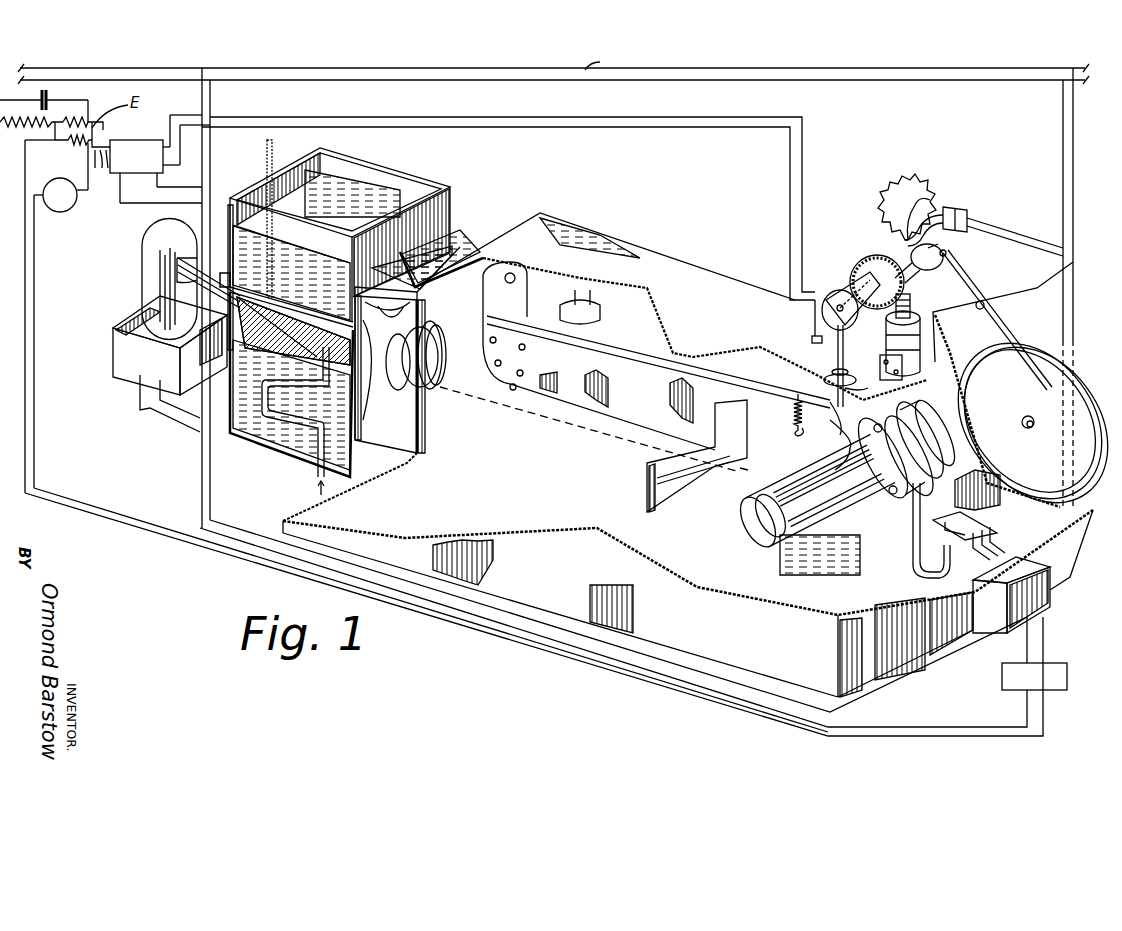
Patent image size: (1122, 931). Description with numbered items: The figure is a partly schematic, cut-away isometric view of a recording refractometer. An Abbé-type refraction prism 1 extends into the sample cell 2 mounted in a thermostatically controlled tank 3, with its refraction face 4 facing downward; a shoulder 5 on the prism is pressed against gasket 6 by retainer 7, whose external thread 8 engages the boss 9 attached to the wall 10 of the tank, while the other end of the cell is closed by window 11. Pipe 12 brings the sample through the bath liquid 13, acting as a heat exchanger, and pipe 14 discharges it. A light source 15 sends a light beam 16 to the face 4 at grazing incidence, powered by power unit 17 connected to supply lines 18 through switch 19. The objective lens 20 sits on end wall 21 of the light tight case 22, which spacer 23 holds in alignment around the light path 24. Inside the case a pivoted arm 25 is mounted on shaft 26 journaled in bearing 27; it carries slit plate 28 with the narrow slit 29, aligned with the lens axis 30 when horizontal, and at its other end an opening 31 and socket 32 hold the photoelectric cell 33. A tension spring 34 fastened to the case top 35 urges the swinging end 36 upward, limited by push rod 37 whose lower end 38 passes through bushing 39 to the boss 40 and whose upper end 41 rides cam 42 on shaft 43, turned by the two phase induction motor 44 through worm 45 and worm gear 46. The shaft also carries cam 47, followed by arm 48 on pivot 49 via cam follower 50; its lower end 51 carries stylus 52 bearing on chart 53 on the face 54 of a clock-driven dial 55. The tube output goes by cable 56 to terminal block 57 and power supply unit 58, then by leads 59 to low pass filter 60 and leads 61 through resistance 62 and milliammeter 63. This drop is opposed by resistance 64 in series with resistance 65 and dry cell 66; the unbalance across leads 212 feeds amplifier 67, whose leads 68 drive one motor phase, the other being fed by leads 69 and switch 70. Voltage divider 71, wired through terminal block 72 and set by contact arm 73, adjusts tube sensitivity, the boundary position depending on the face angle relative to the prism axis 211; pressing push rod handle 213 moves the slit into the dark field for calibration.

The refraction prism 1 is at (293, 312).
The sample vessel or cell 2 is at (320, 312).
The thermostatically controlled tank 3 is at (368, 165).
The refraction face 4 is at (275, 322).
The shoulder 5 is at (345, 390).
The gasket 6 is at (322, 400).
The retainer 7 is at (385, 395).
The external thread 8 is at (387, 305).
The boss 9 is at (352, 420).
The wall 10 is at (333, 481).
The window 11 is at (220, 277).
The pipe 12 is at (277, 428).
The thermostatic bath liquid 13 is at (291, 384).
The pipe 14 is at (274, 160).
The light source 15 is at (145, 262).
The light beam 16 is at (209, 277).
The power unit 17 is at (118, 340).
The current supply lines 18 is at (334, 75).
The switch 19 is at (153, 418).
The objective lens 20 is at (432, 350).
The end wall 21 is at (423, 438).
The light tight case 22 is at (622, 240).
The spacer 23 is at (455, 250).
The light path 24 is at (390, 362).
The pivoted arm 25 is at (608, 348).
The shaft 26 is at (599, 356).
The bearing 27 is at (495, 385).
The slit plate 28 is at (665, 500).
The slit 29 is at (700, 470).
The axis 30 is at (742, 470).
The opening 31 is at (883, 495).
The socket 32 is at (930, 460).
The photoelectric cell 33 is at (765, 550).
The tension spring 34 is at (795, 413).
The top 35 is at (708, 310).
The swinging end 36 is at (936, 445).
The push rod 37 is at (845, 365).
The lower end 38 is at (828, 378).
The bushing 39 is at (862, 386).
The boss 40 is at (845, 420).
The upper end 41 is at (829, 310).
The cam 42 is at (840, 295).
The shaft 43 is at (922, 269).
The two phase induction motor 44 is at (886, 330).
The worm 45 is at (915, 301).
The worm gear 46 is at (872, 262).
The cam 47 is at (943, 240).
The arm 48 is at (958, 275).
The pivot 49 is at (985, 303).
The cam follower 50 is at (960, 243).
The lower end 51 is at (1030, 373).
The stylus 52 is at (1035, 355).
The chart 53 is at (963, 363).
The face 54 is at (972, 355).
The dial 55 is at (1027, 342).
The multiple cable 56 is at (913, 545).
The terminal block 57 is at (940, 550).
The power supply unit 58 is at (993, 625).
The leads 59 is at (1030, 645).
The low pass filter 60 is at (1013, 688).
The leads 61 is at (898, 732).
The resistance 62 is at (72, 143).
The milliammeter 63 is at (64, 210).
The resistance 64 is at (80, 122).
The resistance 65 is at (31, 133).
The dry cell 66 is at (50, 98).
The high gain amplifier 67 is at (133, 141).
The leads 68 is at (364, 124).
The leads 69 is at (1065, 200).
The switch 70 is at (1060, 150).
The voltage divider 71 is at (893, 178).
The terminal block 72 is at (958, 210).
The contact arm 73 is at (915, 195).
The prism axis 211 is at (300, 352).
The leads 212 is at (108, 175).
The push rod handle 213 is at (812, 340).